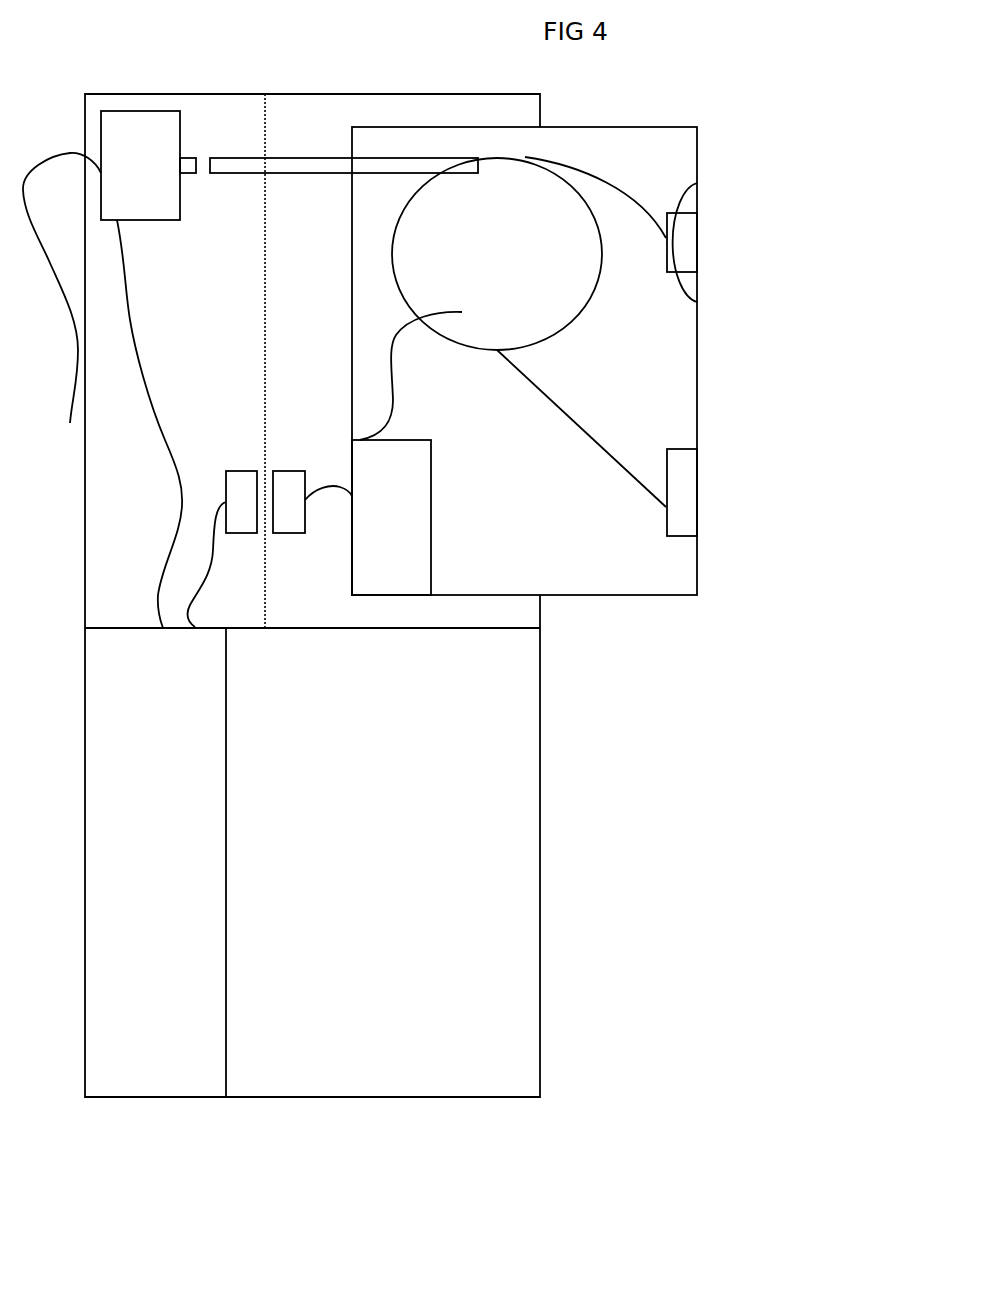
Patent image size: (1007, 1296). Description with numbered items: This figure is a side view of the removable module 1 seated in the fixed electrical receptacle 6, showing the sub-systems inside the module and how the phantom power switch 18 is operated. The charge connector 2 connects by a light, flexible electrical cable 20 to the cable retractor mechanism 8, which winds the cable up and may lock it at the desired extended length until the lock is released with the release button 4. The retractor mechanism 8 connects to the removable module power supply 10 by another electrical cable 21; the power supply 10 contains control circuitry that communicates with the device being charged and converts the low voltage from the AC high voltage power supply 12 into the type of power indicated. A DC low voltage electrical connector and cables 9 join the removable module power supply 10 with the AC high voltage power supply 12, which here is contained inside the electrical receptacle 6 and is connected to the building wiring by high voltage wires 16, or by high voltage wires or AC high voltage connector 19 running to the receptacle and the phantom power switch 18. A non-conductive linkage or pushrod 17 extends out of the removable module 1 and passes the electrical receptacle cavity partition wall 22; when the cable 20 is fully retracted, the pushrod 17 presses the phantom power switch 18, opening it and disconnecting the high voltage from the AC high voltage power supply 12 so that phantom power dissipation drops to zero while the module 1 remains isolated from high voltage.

The removable module 1 is at (718, 382).
The charge connector 2 is at (281, 257).
The release button 4 is at (711, 506).
The electrical receptacle 6 is at (563, 725).
The cable retractor mechanism 8 is at (586, 334).
The DC low voltage electrical connector and cables 9 is at (320, 538).
The removable module power supply 10 is at (446, 586).
The AC high voltage power supply 12 is at (249, 820).
The high voltage wires 16 is at (77, 295).
The linkage or pushrod 17 is at (485, 154).
The phantom power switch 18 is at (203, 116).
The high voltage wires or AC high voltage connector 19 is at (195, 467).
The electrical cable 20 is at (625, 187).
The electrical cable 21 is at (408, 427).
The electrical receptacle cavity partition wall 22 is at (711, 225).